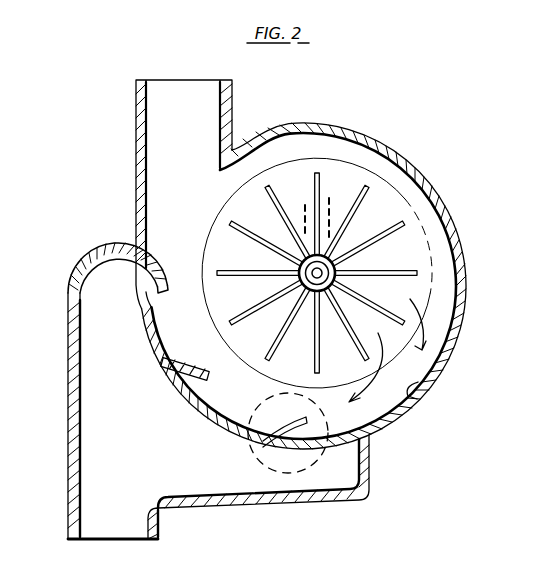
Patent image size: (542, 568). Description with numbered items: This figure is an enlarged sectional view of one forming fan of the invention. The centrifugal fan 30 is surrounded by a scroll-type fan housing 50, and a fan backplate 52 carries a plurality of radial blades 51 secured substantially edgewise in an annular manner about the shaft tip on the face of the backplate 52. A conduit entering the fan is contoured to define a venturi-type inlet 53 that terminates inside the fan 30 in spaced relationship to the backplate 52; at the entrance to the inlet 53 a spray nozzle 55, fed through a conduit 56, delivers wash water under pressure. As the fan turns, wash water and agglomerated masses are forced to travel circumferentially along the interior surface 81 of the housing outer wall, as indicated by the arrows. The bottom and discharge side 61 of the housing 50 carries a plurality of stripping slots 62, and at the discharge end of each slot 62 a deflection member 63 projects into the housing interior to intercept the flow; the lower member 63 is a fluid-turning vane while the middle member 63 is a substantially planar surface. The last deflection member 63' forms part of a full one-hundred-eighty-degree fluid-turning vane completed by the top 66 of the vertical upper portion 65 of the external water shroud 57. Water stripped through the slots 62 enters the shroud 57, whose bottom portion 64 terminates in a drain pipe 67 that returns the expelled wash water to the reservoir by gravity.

The centrifugal fan 30 is at (416, 106).
The fan housing 50 is at (455, 345).
The radial blades 51 is at (320, 198).
The fan backplate 52 is at (413, 205).
The venturi-type inlet 53 is at (357, 265).
The spray nozzle 55 is at (323, 306).
The conduit 56 is at (304, 213).
The water shroud 57 is at (52, 344).
The discharge side 61 is at (135, 125).
The stripping slots 62 is at (146, 279).
The deflection member 63 is at (234, 390).
The last deflection member 63' is at (180, 268).
The bottom portion 64 is at (369, 490).
The vertical upper portion 65 is at (68, 408).
The top 66 is at (111, 243).
The drain pipe 67 is at (114, 539).
The interior surface 81 is at (419, 402).